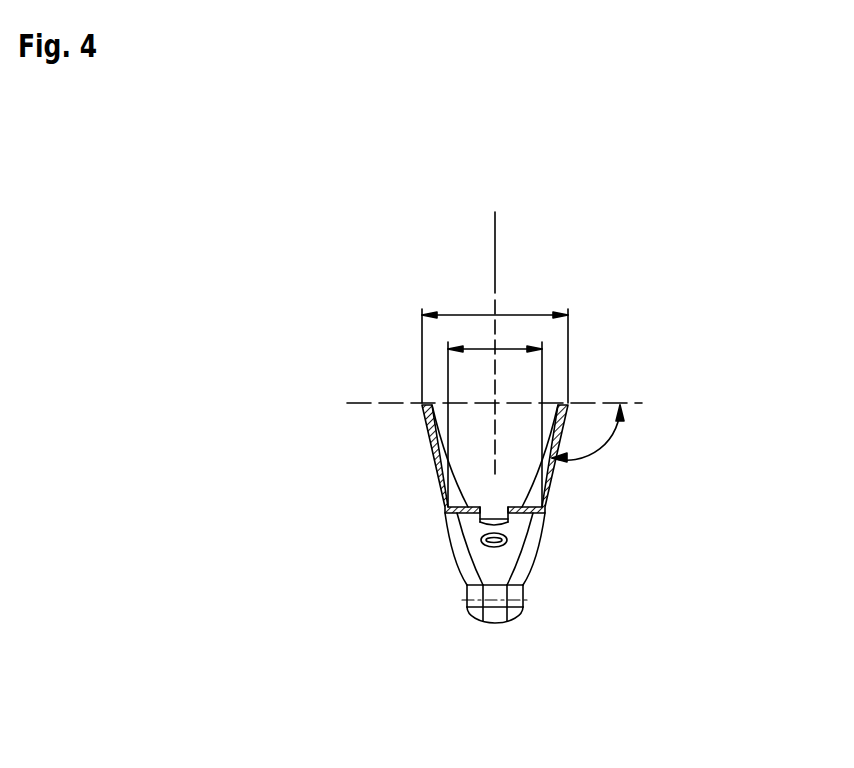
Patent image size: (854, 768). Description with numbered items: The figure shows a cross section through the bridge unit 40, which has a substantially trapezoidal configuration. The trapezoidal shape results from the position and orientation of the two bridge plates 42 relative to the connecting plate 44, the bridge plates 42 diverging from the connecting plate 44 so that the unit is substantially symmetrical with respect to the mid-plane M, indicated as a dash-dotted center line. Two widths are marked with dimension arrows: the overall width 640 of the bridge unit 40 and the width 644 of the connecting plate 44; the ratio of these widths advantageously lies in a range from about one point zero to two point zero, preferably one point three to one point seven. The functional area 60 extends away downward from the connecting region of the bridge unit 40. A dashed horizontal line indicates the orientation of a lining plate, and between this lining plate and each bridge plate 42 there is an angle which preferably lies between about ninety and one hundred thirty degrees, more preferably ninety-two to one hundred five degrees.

The bridge unit 40 is at (440, 573).
The bridge plates 42 is at (427, 430).
The connecting plate 44 is at (527, 532).
The functional area 60 is at (493, 618).
The width of the bridge unit 640 is at (495, 315).
The width of the connecting plate 644 is at (460, 312).
The mid-plane M is at (493, 228).